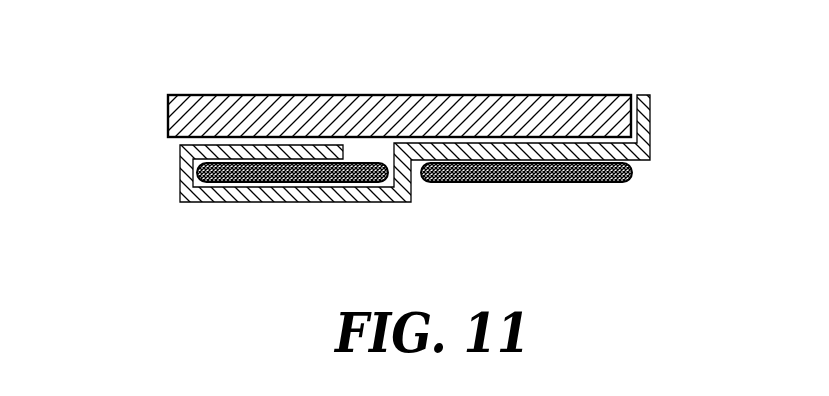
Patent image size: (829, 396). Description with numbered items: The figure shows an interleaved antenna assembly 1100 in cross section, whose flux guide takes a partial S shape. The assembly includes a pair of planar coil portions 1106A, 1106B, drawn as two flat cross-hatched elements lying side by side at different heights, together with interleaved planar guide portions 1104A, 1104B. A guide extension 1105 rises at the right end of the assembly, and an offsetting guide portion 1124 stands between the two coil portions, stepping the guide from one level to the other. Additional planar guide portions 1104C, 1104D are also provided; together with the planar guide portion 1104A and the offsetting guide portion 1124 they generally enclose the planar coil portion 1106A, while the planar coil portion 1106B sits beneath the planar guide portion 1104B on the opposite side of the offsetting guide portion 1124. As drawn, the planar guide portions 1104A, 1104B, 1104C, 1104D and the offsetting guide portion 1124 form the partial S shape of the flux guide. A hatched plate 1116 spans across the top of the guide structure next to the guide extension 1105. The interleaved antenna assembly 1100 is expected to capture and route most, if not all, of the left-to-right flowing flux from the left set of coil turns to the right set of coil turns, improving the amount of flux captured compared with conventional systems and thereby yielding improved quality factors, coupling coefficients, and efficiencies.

The interleaved antenna assembly 1100 is at (413, 44).
The top plate / cover 1116 is at (585, 95).
The guide extension 1105 is at (650, 95).
The planar guide portion 1104A is at (242, 200).
The planar guide portion 1104B is at (632, 162).
The planar guide portion 1104C is at (183, 167).
The planar guide portion 1104D is at (220, 153).
The offsetting guide portion 1124 is at (408, 198).
The planar coil portion 1106A is at (258, 183).
The planar coil portion 1106B is at (502, 183).